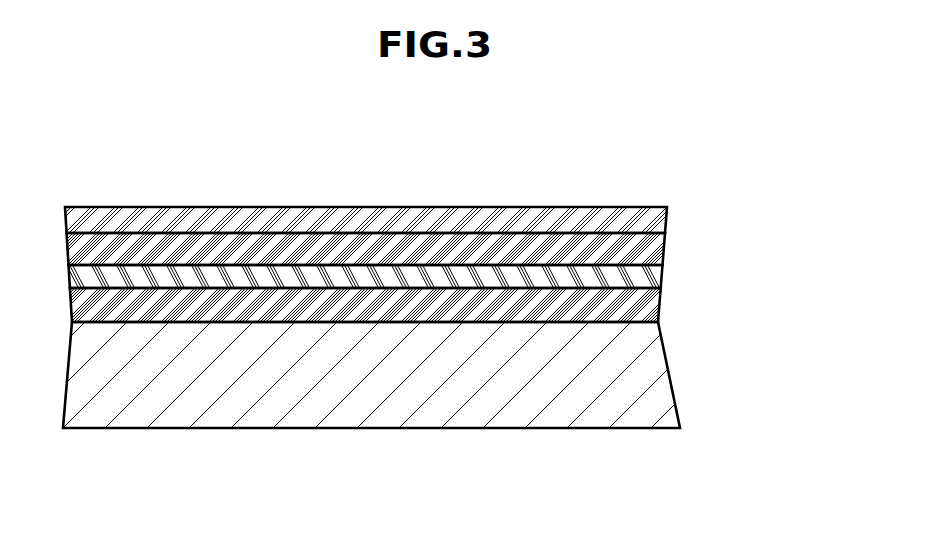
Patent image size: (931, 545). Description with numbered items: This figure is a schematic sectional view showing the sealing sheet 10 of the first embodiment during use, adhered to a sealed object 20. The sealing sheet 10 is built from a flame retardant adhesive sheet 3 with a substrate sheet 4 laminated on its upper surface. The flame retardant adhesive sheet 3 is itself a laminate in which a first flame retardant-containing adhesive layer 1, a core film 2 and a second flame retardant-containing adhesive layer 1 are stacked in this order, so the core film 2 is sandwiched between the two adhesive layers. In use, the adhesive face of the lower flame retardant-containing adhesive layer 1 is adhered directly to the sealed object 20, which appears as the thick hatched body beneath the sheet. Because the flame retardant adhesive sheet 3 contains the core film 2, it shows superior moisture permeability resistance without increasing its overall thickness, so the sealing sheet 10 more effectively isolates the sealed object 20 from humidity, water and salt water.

The sealing sheet 10 is at (441, 215).
The substrate sheet 4 is at (660, 219).
The flame retardant-containing adhesive layer 1 is at (658, 243).
The core film 2 is at (658, 275).
The flame retardant adhesive sheet 3 is at (442, 278).
The sealed object 20 is at (648, 390).